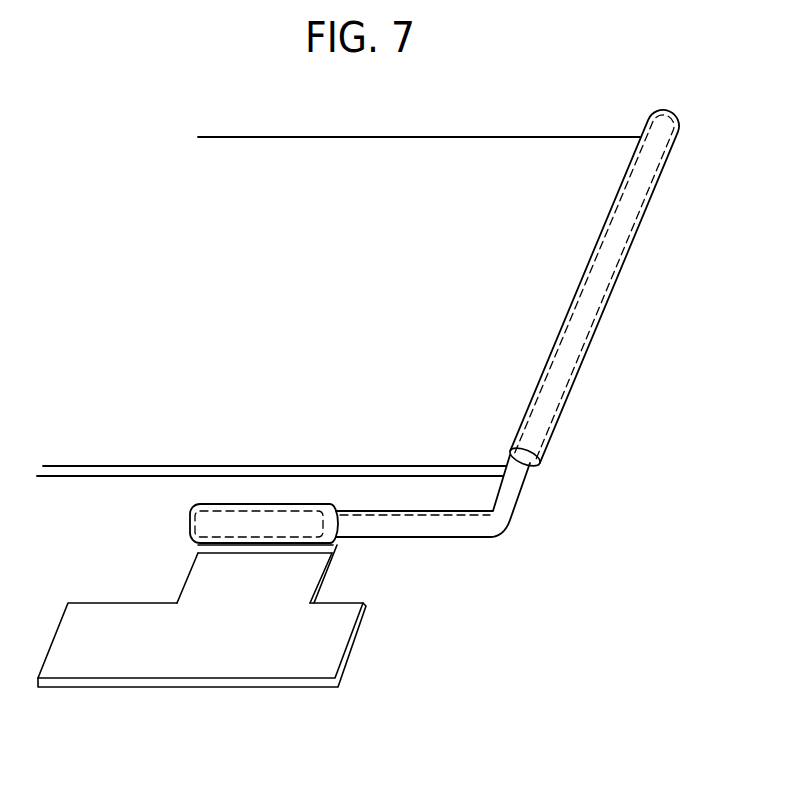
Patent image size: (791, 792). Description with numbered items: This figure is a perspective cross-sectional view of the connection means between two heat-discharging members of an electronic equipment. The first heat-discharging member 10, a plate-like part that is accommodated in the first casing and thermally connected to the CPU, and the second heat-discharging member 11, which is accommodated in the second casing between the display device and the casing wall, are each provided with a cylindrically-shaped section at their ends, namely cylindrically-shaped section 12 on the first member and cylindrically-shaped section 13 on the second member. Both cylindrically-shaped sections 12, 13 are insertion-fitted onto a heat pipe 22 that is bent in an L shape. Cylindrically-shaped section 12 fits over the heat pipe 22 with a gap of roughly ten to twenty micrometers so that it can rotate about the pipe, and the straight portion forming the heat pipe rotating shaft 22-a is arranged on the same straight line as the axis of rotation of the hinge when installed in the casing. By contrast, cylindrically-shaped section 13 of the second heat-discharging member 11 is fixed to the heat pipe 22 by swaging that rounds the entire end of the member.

The first heat-discharging member 10 is at (247, 668).
The second heat-discharging member 11 is at (100, 462).
The cylindrically-shaped section 12 is at (186, 533).
The cylindrically-shaped section 13 is at (592, 296).
The heat pipe 22 is at (512, 502).
The heat pipe rotating shaft 22-a is at (400, 527).